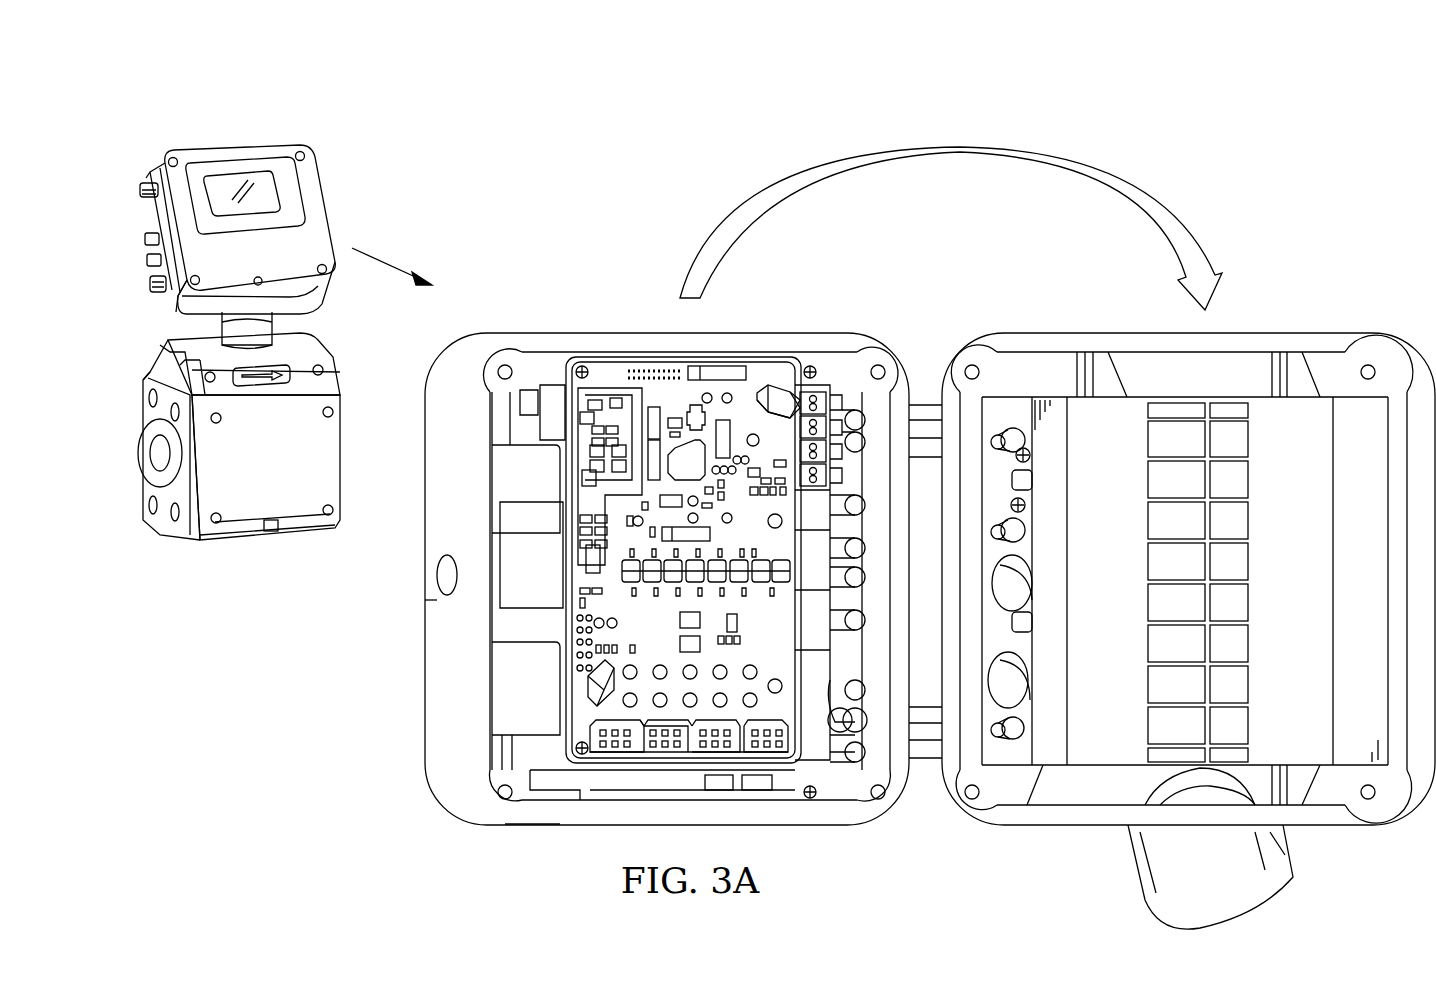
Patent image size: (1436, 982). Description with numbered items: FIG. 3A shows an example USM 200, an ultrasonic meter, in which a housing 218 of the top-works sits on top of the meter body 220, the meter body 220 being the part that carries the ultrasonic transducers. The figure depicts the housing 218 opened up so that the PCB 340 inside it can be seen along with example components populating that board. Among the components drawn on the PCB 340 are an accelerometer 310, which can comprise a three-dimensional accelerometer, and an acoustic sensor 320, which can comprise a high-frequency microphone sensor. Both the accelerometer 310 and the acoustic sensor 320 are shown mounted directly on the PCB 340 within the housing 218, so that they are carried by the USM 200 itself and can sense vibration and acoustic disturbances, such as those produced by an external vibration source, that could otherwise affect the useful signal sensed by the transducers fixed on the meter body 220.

The USM 200 is at (176, 135).
The housing 218 is at (432, 608).
The meter body 220 is at (238, 548).
The accelerometer 310 is at (790, 392).
The acoustic sensor 320 is at (595, 683).
The PCB 340 is at (606, 360).